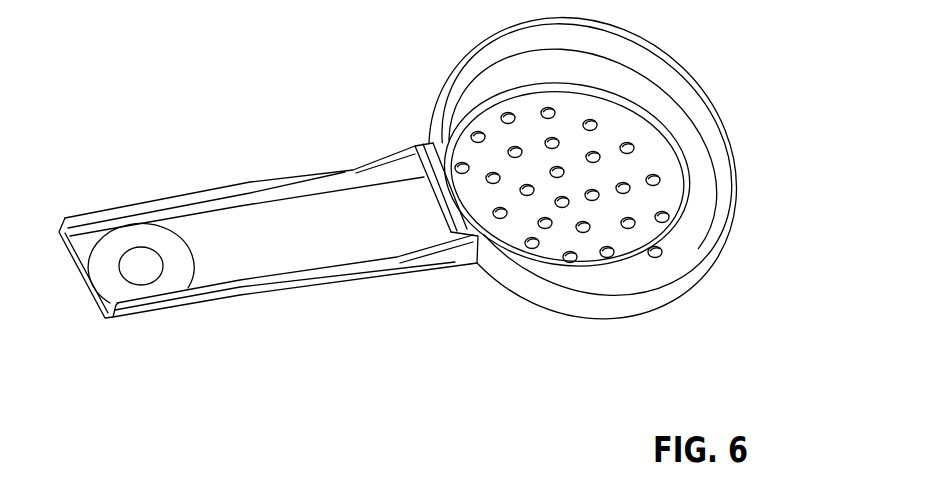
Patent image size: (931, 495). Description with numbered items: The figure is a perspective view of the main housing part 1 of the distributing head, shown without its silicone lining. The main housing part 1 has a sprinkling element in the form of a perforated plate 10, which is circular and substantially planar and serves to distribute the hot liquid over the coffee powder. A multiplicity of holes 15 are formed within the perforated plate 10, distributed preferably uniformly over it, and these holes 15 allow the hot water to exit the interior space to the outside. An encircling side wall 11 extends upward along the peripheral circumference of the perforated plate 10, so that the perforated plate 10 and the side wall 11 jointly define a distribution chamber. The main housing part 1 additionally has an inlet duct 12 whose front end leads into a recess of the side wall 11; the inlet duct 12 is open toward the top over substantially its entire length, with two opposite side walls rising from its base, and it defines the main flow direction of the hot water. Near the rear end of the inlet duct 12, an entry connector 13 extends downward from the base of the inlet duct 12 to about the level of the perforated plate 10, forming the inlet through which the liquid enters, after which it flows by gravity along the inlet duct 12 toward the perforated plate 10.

The main housing part 1 is at (443, 188).
The perforated plate 10 is at (610, 223).
The side wall 11 is at (687, 133).
The inlet duct 12 is at (263, 267).
The entry connector 13 is at (142, 273).
The holes 15 is at (655, 181).